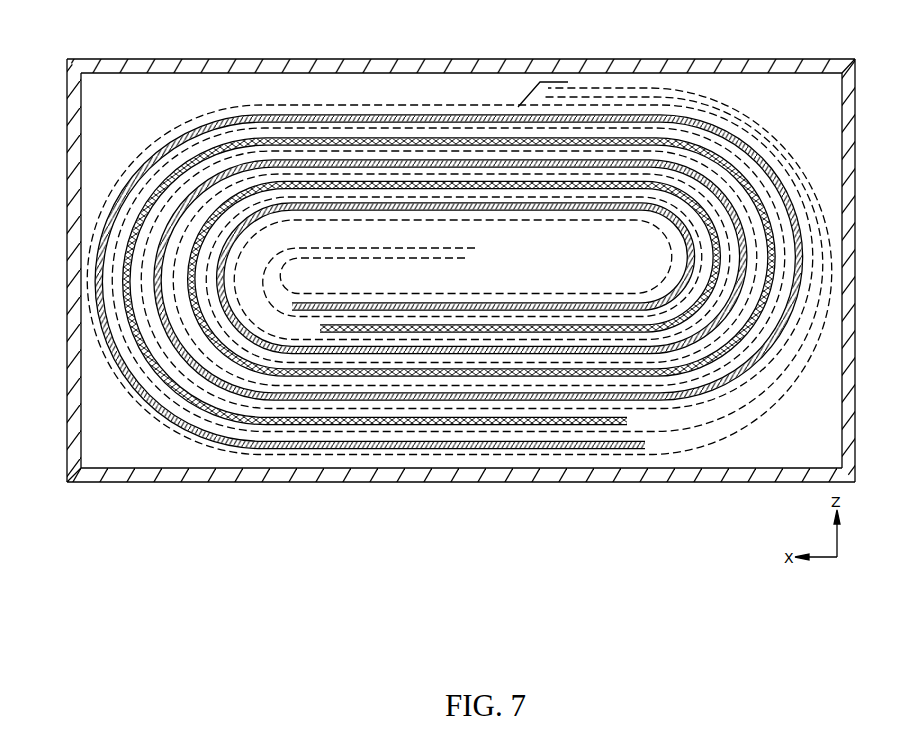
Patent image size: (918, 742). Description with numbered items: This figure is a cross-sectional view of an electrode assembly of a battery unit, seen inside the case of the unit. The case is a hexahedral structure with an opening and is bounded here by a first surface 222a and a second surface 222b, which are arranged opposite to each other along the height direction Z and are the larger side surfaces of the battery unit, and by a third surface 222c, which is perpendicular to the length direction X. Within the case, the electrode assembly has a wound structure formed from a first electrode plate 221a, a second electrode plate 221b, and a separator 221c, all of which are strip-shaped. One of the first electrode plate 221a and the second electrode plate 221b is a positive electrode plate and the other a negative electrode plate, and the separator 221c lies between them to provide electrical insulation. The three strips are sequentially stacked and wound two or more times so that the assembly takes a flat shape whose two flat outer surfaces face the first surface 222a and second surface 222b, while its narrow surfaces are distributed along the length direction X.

The first electrode plate 221a is at (748, 143).
The second electrode plate 221b is at (697, 368).
The separator 221c is at (748, 345).
The first surface 222a is at (455, 63).
The second surface 222b is at (478, 481).
The third surface 222c is at (66, 221).